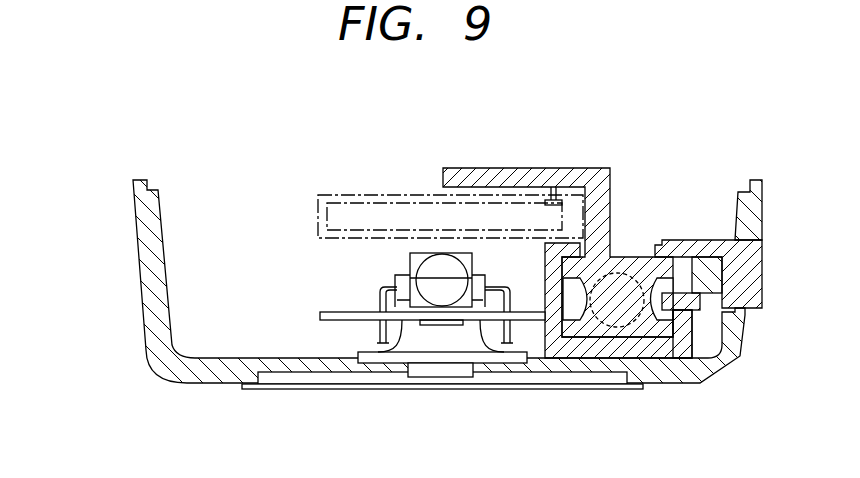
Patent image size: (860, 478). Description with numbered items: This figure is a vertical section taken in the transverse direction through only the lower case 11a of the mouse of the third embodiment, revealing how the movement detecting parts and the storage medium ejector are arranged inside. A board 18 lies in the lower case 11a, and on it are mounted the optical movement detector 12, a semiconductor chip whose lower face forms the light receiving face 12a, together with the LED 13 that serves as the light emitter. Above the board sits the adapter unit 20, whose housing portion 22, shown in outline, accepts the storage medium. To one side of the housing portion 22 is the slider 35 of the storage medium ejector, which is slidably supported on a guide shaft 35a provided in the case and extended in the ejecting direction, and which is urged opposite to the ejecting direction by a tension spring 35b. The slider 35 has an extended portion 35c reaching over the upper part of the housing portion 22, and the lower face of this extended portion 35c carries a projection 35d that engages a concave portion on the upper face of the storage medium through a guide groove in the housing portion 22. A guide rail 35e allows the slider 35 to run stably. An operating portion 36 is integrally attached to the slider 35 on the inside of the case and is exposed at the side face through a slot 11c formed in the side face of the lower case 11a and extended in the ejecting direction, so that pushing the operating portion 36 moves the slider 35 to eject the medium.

The lower case 11a is at (140, 277).
The slot 11c is at (747, 314).
The optical movement detector 12 is at (395, 282).
The light receiving face 12a is at (433, 326).
The LED 13 is at (447, 292).
The board 18 is at (335, 322).
The adapter unit 20 is at (428, 157).
The housing portion 22 is at (383, 195).
The slider 35 is at (604, 285).
The guide shaft 35a is at (617, 338).
The tension spring 35b is at (632, 272).
The extended portion 35c is at (484, 168).
The projection 35d is at (570, 168).
The guide rail 35e is at (712, 336).
The operating portion 36 is at (763, 263).